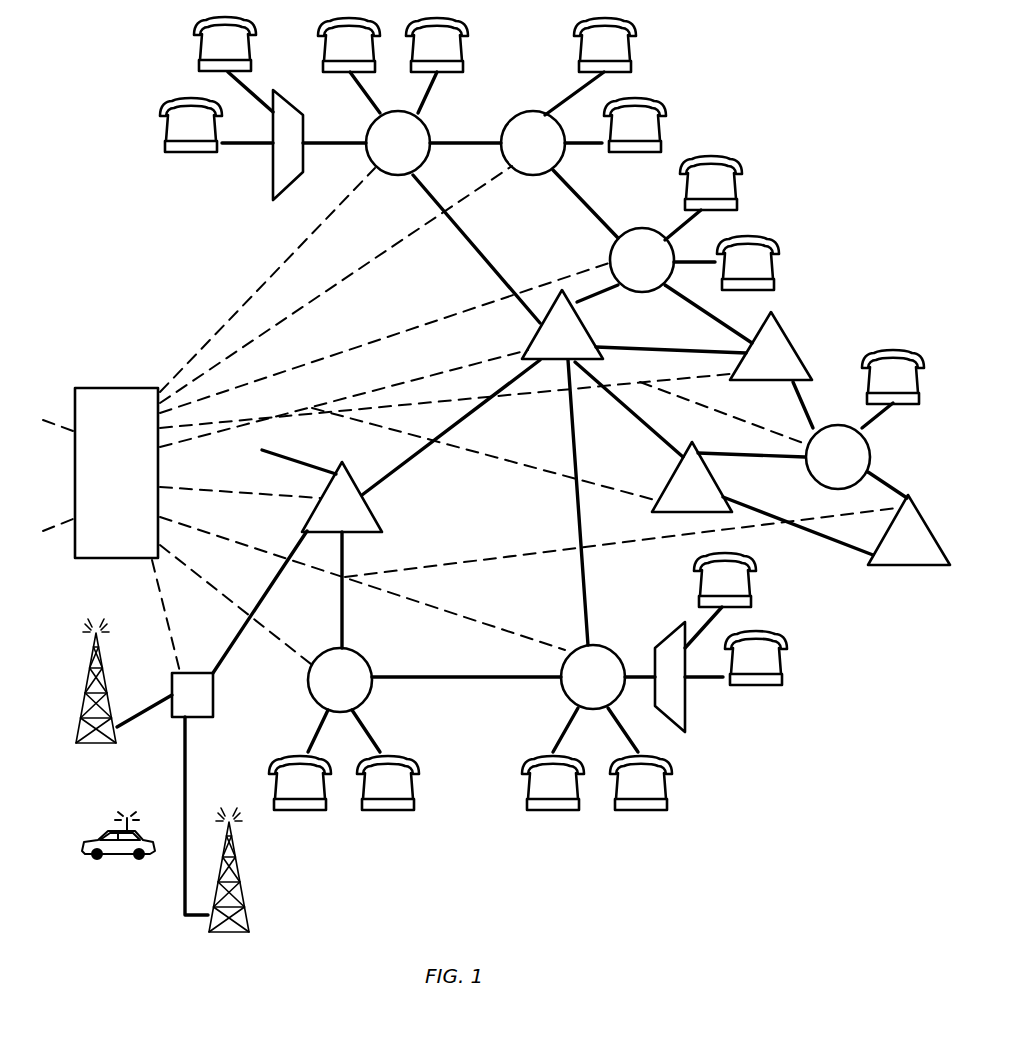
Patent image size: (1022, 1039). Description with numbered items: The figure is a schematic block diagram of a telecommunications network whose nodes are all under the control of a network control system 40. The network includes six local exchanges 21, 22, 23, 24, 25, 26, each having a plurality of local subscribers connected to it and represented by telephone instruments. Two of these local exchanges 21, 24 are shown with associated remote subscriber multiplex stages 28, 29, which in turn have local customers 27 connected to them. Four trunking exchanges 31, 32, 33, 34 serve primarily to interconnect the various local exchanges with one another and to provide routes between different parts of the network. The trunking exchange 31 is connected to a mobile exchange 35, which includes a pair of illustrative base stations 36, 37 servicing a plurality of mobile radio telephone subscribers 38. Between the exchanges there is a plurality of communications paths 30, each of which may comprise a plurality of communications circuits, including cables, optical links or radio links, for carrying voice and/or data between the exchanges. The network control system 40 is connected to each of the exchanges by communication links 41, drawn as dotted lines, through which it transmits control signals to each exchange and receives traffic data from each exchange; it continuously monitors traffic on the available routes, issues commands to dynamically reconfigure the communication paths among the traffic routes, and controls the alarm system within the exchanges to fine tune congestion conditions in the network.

The local exchange 21 is at (426, 130).
The local exchange 22 is at (526, 113).
The local exchange 23 is at (650, 292).
The local exchange 24 is at (562, 696).
The local exchange 25 is at (372, 700).
The local exchange 26 is at (871, 452).
The local customers 27 is at (258, 52).
The remote subscriber multiplex stage 28 is at (272, 183).
The remote subscriber multiplex stage 29 is at (688, 705).
The communications paths 30 is at (328, 143).
The trunking exchange 31 is at (374, 512).
The trunking exchange 32 is at (536, 338).
The trunking exchange 33 is at (718, 482).
The trunking exchange 34 is at (790, 335).
The mobile exchange 35 is at (215, 697).
The base station 36 is at (102, 745).
The base station 37 is at (240, 876).
The mobile radio telephone subscribers 38 is at (112, 858).
The network control system 40 is at (106, 525).
The communication links 41 is at (718, 417).